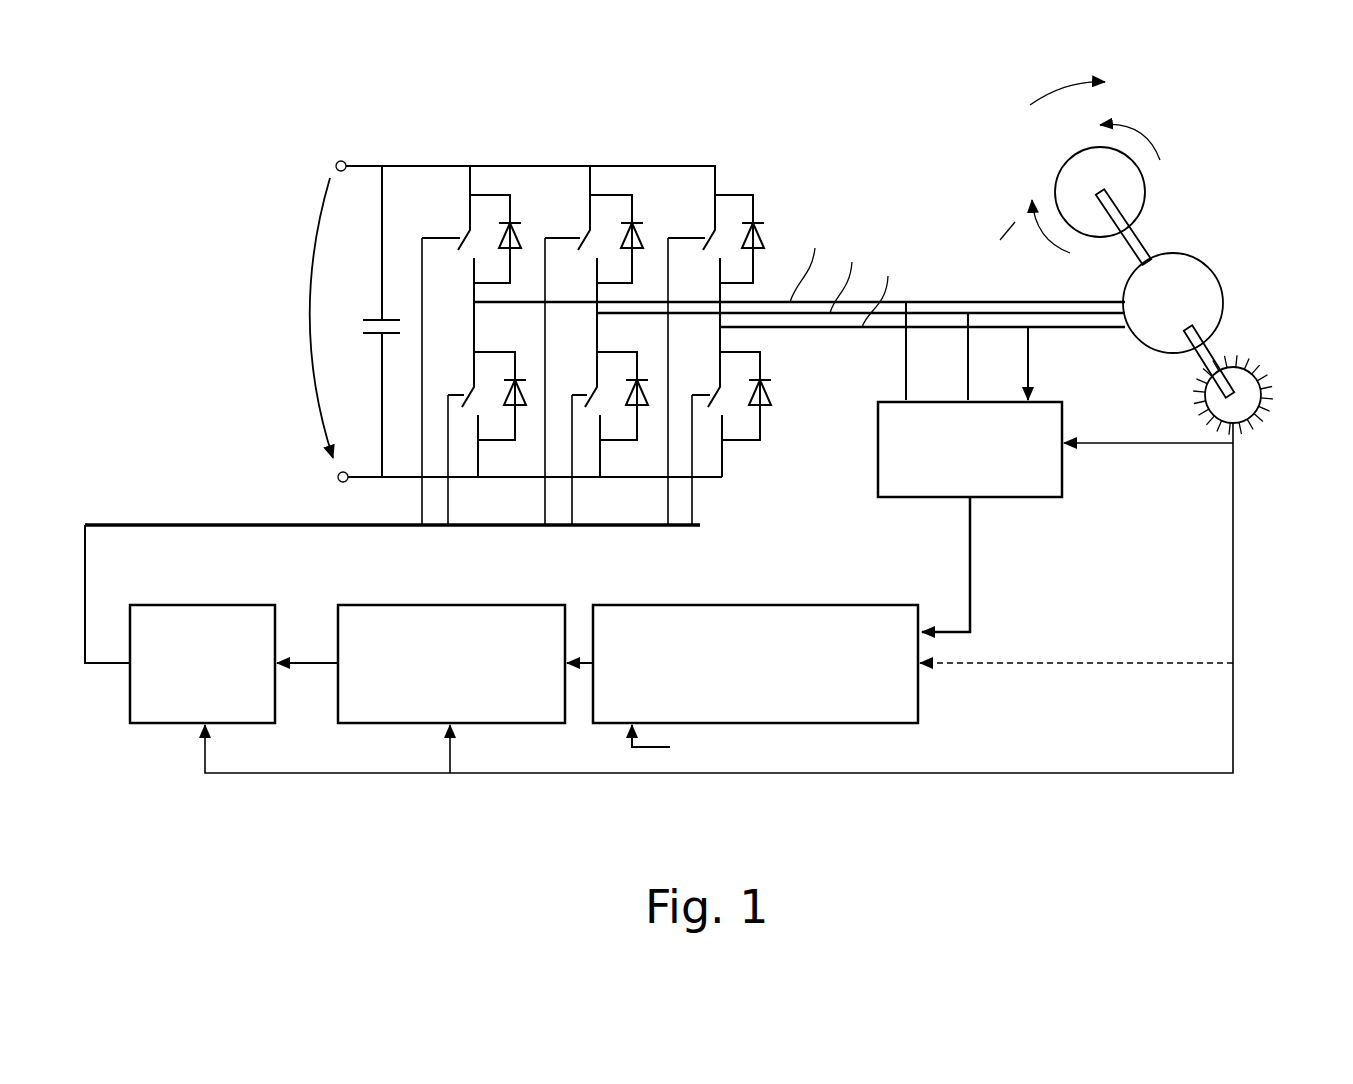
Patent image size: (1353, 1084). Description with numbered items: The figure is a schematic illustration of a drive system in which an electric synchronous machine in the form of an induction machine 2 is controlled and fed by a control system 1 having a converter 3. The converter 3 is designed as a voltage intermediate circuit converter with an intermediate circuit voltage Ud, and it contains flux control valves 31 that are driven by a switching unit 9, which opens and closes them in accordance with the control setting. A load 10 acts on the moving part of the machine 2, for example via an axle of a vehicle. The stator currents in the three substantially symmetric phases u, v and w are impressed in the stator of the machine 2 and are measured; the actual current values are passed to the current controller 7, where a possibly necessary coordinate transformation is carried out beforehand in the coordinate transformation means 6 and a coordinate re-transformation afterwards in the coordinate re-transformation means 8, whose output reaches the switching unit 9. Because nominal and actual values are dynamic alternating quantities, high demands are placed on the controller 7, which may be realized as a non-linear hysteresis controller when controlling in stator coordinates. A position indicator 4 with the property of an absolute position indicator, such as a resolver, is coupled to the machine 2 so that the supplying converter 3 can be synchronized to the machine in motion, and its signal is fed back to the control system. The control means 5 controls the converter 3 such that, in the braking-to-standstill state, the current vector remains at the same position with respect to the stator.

The control system 1 is at (172, 225).
The induction machine 2 is at (1213, 300).
The converter 3 is at (713, 138).
The flux control valves 31 is at (622, 176).
The position indicator 4 is at (1262, 390).
The control means 5 is at (143, 797).
The coordinate transformation means 6 is at (1020, 497).
The current controller 7 is at (735, 605).
The coordinate re-transformation means 8 is at (448, 605).
The switching unit 9 is at (195, 605).
The load 10 is at (1130, 187).